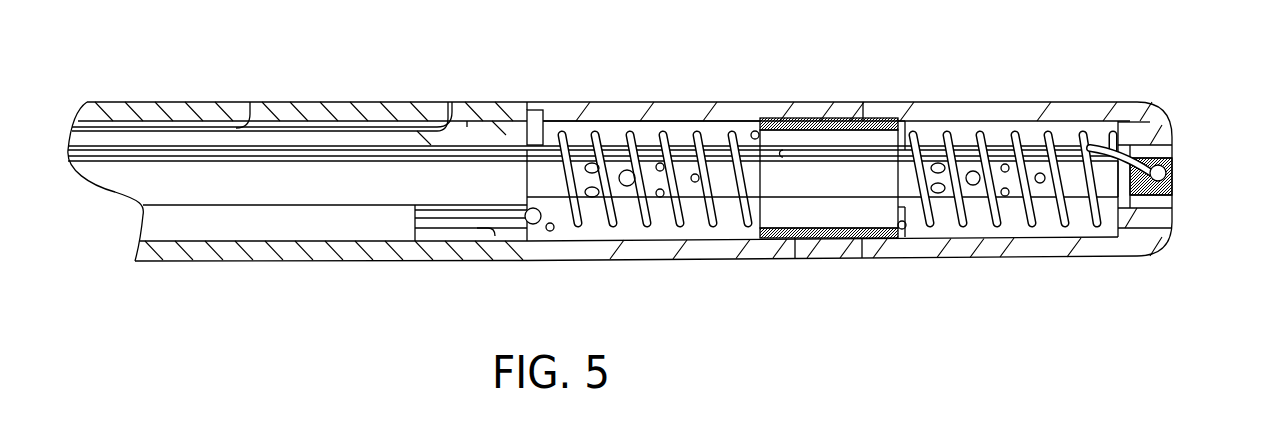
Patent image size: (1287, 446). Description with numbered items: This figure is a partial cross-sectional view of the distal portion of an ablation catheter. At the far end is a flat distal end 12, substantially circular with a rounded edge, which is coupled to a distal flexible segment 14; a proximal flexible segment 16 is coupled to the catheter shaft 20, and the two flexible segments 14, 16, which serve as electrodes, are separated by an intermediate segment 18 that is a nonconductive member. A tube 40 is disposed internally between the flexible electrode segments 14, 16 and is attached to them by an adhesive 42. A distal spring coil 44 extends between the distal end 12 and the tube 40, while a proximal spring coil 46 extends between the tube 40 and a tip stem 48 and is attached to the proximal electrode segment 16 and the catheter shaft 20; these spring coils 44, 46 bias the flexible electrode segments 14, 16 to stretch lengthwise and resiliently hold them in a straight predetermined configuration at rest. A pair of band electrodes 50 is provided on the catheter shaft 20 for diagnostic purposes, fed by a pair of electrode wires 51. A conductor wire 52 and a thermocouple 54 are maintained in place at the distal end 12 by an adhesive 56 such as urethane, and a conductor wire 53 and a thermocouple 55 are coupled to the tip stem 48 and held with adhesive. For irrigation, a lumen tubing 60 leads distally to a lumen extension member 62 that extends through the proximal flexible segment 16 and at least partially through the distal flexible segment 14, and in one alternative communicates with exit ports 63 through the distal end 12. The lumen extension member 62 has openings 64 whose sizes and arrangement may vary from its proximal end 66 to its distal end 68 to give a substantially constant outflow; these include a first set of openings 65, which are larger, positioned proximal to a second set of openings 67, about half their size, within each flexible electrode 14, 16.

The distal end 12 is at (1162, 100).
The distal flexible segment 14 is at (940, 107).
The proximal flexible segment 16 is at (623, 105).
The intermediate segment 18 is at (857, 299).
The catheter shaft 20 is at (180, 109).
The tube 40 is at (801, 218).
The adhesive 42 is at (853, 269).
The distal spring coil 44 is at (1048, 130).
The proximal spring coil 46 is at (731, 129).
The tip stem 48 is at (525, 120).
The band electrodes 50 is at (238, 103).
The electrode wires 51 is at (217, 130).
The conductor wire 52 is at (1148, 160).
The conductor wire 53 is at (473, 230).
The thermocouple 54 is at (1160, 170).
The thermocouple 55 is at (533, 225).
The adhesive 56 is at (1180, 195).
The lumen tubing 60 is at (408, 178).
The lumen extension member 62 is at (816, 172).
The exit ports 63 is at (1169, 166).
The openings 64 is at (649, 171).
The first set of openings 65 is at (973, 185).
The proximal end 66 is at (647, 214).
The second set of openings 67 is at (660, 197).
The distal end 68 is at (1068, 175).